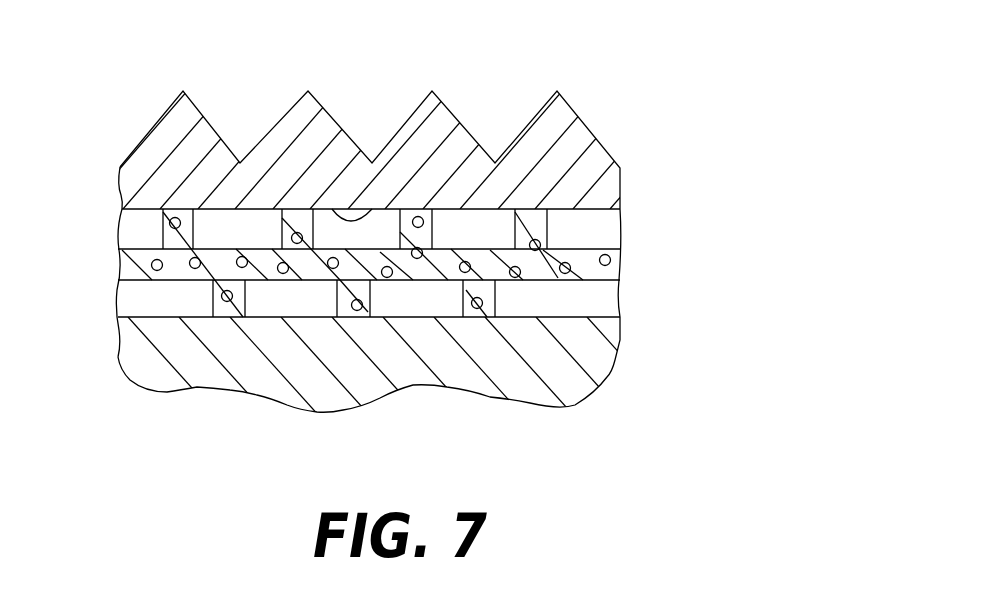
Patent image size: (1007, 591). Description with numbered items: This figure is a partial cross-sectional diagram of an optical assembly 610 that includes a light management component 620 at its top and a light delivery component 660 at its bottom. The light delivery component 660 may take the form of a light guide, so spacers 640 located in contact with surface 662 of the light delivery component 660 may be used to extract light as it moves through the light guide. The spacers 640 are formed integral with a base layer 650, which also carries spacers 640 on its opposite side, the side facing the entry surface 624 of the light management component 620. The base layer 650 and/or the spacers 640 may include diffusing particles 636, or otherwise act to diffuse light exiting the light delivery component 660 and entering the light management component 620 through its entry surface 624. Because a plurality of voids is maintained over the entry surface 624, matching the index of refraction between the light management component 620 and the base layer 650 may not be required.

The optical assembly 610 is at (612, 66).
The light management component 620 is at (577, 133).
The entry surface 624 is at (377, 207).
The diffusing particles 636 is at (120, 263).
The spacers 640 is at (280, 230).
The base layer 650 is at (605, 272).
The surface 662 is at (597, 318).
The light delivery component 660 is at (593, 375).